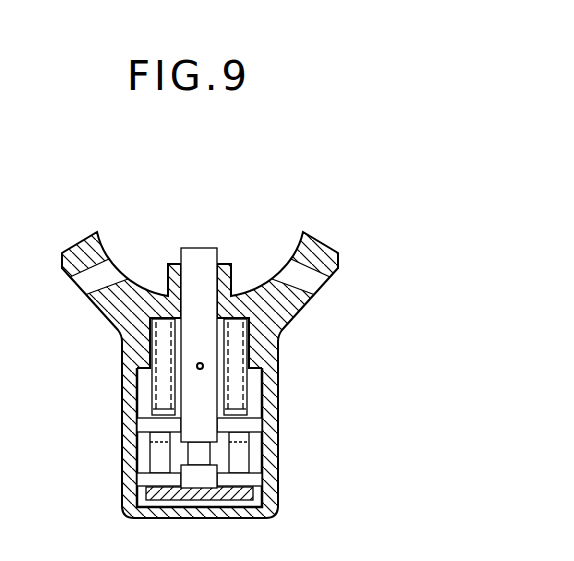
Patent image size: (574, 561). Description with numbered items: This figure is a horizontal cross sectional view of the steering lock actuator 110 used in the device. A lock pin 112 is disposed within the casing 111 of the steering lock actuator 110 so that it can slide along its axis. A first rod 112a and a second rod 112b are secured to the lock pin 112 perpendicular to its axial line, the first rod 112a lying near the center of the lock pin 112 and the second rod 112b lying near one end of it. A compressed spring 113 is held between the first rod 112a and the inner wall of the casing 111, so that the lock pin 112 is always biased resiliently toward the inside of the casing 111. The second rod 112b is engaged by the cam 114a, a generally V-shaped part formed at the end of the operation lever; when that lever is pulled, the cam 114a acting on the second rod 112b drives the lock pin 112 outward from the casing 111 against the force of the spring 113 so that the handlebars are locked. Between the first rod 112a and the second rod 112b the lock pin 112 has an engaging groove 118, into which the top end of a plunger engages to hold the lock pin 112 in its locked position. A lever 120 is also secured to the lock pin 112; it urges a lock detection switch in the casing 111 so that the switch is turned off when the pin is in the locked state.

The steering lock actuator 110 is at (402, 305).
The casing 111 is at (279, 396).
The lock pin 112 is at (196, 255).
The first rod 112a is at (140, 424).
The second rod 112b is at (140, 479).
The compressed spring 113 is at (152, 388).
The cam 114a is at (155, 458).
The engaging groove 118 is at (204, 464).
The lever 120 is at (203, 367).